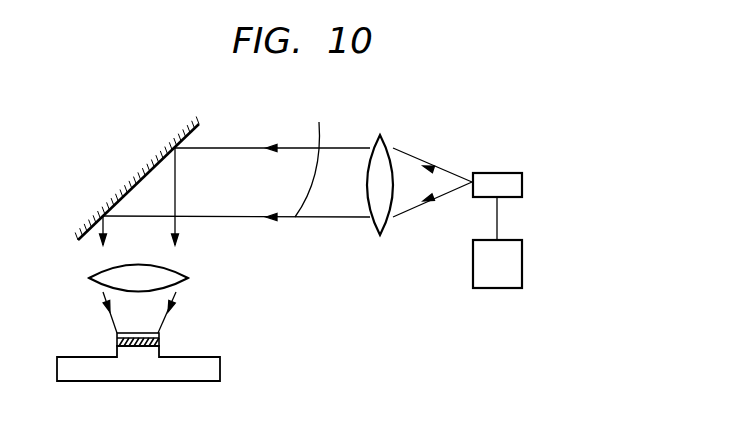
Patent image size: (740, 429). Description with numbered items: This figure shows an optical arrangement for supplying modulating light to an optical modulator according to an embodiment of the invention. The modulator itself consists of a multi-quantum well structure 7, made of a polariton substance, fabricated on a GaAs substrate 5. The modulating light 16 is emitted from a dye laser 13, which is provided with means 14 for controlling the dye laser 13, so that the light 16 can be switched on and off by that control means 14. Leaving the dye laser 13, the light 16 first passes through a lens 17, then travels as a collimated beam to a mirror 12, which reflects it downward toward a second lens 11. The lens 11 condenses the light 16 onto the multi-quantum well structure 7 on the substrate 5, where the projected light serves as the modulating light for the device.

The GaAs substrate 5 is at (218, 366).
The multi-quantum well structure 7 is at (159, 345).
The lens 11 is at (188, 278).
The mirror 12 is at (197, 129).
The dye laser 13 is at (522, 181).
The means for controlling the dye laser 14 is at (522, 251).
The modulating light 16 is at (319, 122).
The lens 17 is at (386, 135).